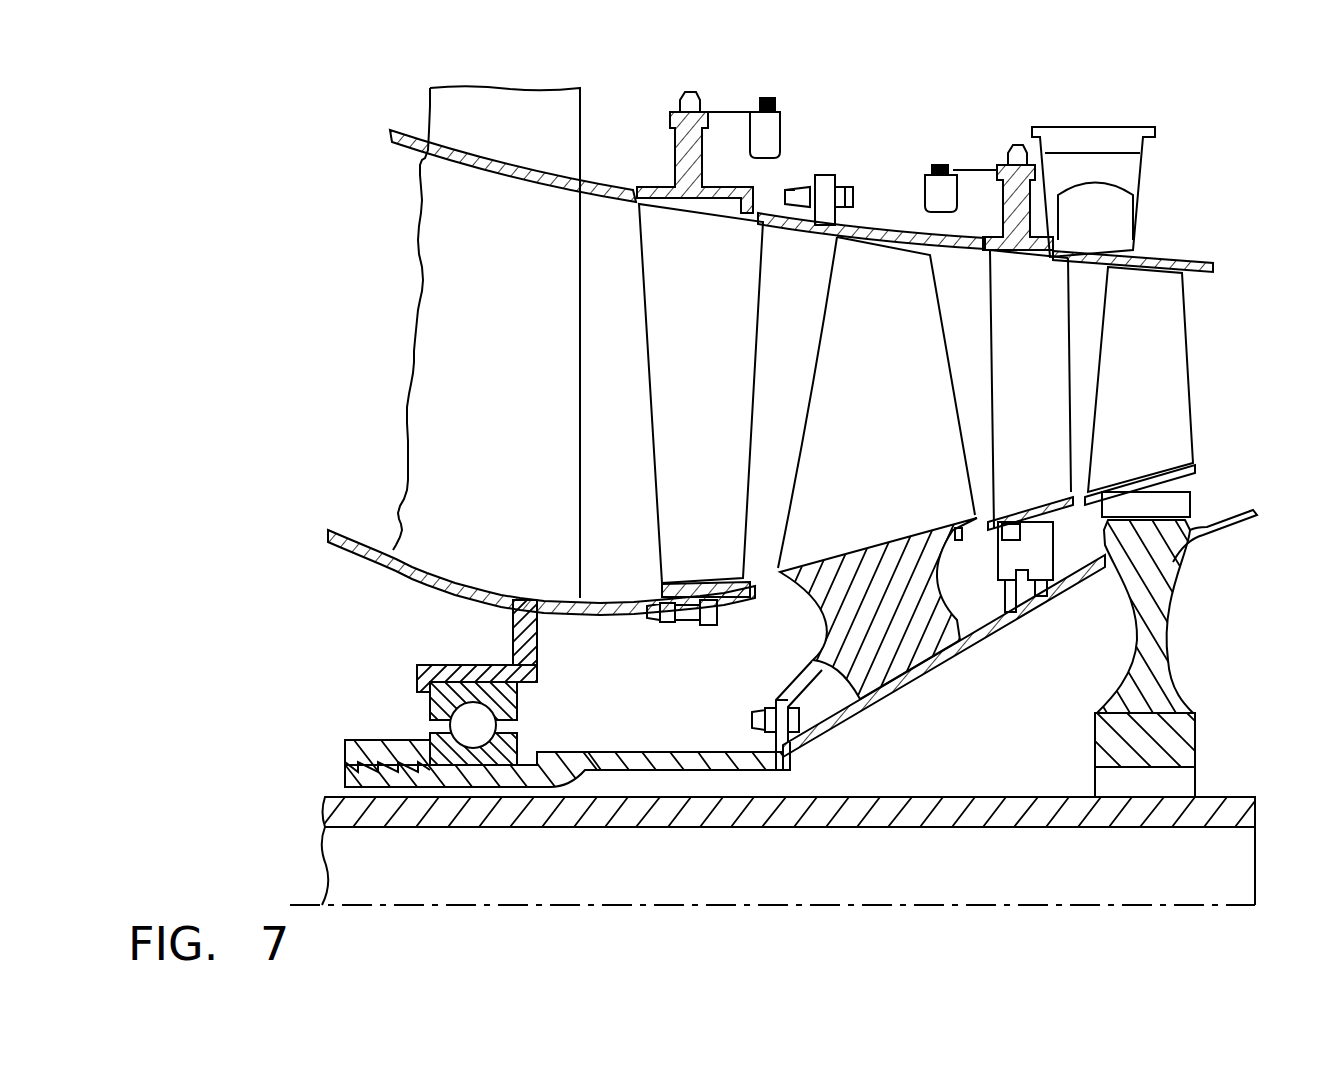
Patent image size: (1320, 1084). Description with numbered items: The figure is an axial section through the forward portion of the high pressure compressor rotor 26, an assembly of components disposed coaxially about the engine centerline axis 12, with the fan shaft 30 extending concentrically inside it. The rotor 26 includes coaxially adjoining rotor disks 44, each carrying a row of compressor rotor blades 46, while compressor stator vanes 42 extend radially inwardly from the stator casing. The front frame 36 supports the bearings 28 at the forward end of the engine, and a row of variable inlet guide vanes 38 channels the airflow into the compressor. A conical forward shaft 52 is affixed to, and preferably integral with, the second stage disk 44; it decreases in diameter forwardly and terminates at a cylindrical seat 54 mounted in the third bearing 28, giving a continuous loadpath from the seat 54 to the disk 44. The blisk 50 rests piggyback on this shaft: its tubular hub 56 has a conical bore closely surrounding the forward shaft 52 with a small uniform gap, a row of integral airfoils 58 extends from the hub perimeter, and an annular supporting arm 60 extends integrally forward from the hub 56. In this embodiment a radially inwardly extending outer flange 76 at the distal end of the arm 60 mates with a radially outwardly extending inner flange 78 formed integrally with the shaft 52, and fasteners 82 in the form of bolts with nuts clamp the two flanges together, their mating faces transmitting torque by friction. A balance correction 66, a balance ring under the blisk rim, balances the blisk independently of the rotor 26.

The centerline axis 12 is at (790, 900).
The compressor rotor 26 is at (1232, 514).
The bearing 28 is at (483, 718).
The fan shaft 30 is at (865, 797).
The front frame 36 is at (499, 311).
The variable inlet guide vane 38 is at (720, 336).
The compressor stator vane 42 is at (999, 378).
The rotor disk 44 is at (1168, 632).
The compressor rotor blade 46 is at (1164, 382).
The blisk 50 is at (798, 605).
The forward shaft 52 is at (1000, 632).
The seat 54 is at (533, 765).
The hub 56 is at (900, 621).
The airfoil 58 is at (900, 429).
The supporting arm 60 is at (797, 668).
The balance correction 66 is at (957, 541).
The outer flange 76 is at (775, 704).
The inner flange 78 is at (786, 745).
The fastener 82 is at (750, 718).